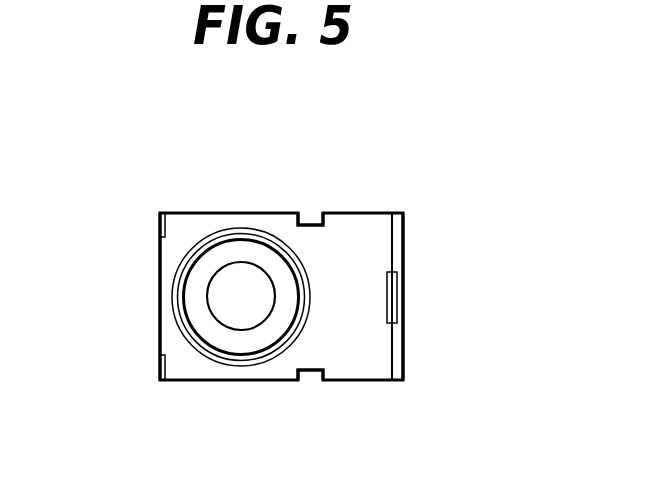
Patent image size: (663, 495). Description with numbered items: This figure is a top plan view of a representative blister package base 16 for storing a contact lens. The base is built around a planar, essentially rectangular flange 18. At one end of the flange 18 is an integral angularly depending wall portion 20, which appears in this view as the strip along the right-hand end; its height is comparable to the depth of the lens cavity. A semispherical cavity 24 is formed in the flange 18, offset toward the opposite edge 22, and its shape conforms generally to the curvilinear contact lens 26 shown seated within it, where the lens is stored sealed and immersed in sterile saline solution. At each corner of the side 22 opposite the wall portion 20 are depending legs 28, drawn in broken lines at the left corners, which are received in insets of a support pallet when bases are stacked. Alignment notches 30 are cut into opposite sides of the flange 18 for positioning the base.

The blister package base 16 is at (411, 194).
The flange 18 is at (360, 265).
The angularly depending wall portion 20 is at (405, 358).
The opposite edge 22 is at (158, 305).
The cavity 24 is at (234, 237).
The contact lens 26 is at (246, 262).
The depending legs 28 is at (158, 228).
The alignment notches 30 is at (316, 206).